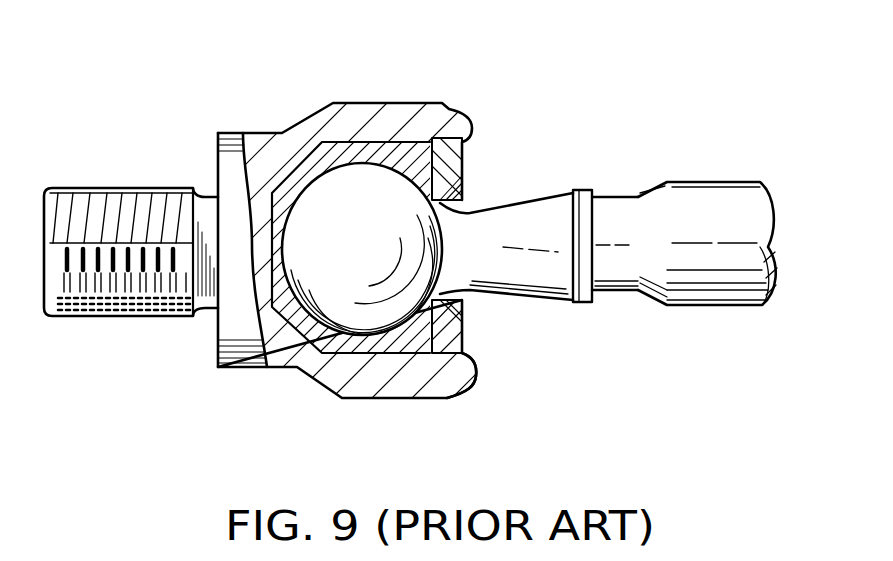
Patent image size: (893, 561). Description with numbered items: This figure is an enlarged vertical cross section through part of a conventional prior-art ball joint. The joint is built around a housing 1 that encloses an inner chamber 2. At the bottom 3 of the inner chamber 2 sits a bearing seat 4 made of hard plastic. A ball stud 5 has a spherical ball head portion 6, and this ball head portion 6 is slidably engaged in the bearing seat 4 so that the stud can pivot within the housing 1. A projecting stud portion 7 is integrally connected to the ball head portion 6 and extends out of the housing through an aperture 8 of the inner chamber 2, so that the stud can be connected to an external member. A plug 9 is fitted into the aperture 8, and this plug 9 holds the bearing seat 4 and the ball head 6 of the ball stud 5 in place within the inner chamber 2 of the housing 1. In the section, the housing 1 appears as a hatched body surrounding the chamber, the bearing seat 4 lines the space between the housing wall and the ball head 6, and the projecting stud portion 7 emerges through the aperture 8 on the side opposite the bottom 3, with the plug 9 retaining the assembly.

The housing 1 is at (392, 110).
The inner chamber 2 is at (353, 132).
The bottom 3 is at (252, 299).
The bearing seat 4 is at (316, 335).
The ball stud 5 is at (533, 213).
The ball head portion 6 is at (402, 212).
The projecting stud portion 7 is at (707, 200).
The aperture 8 is at (435, 320).
The plug 9 is at (447, 357).